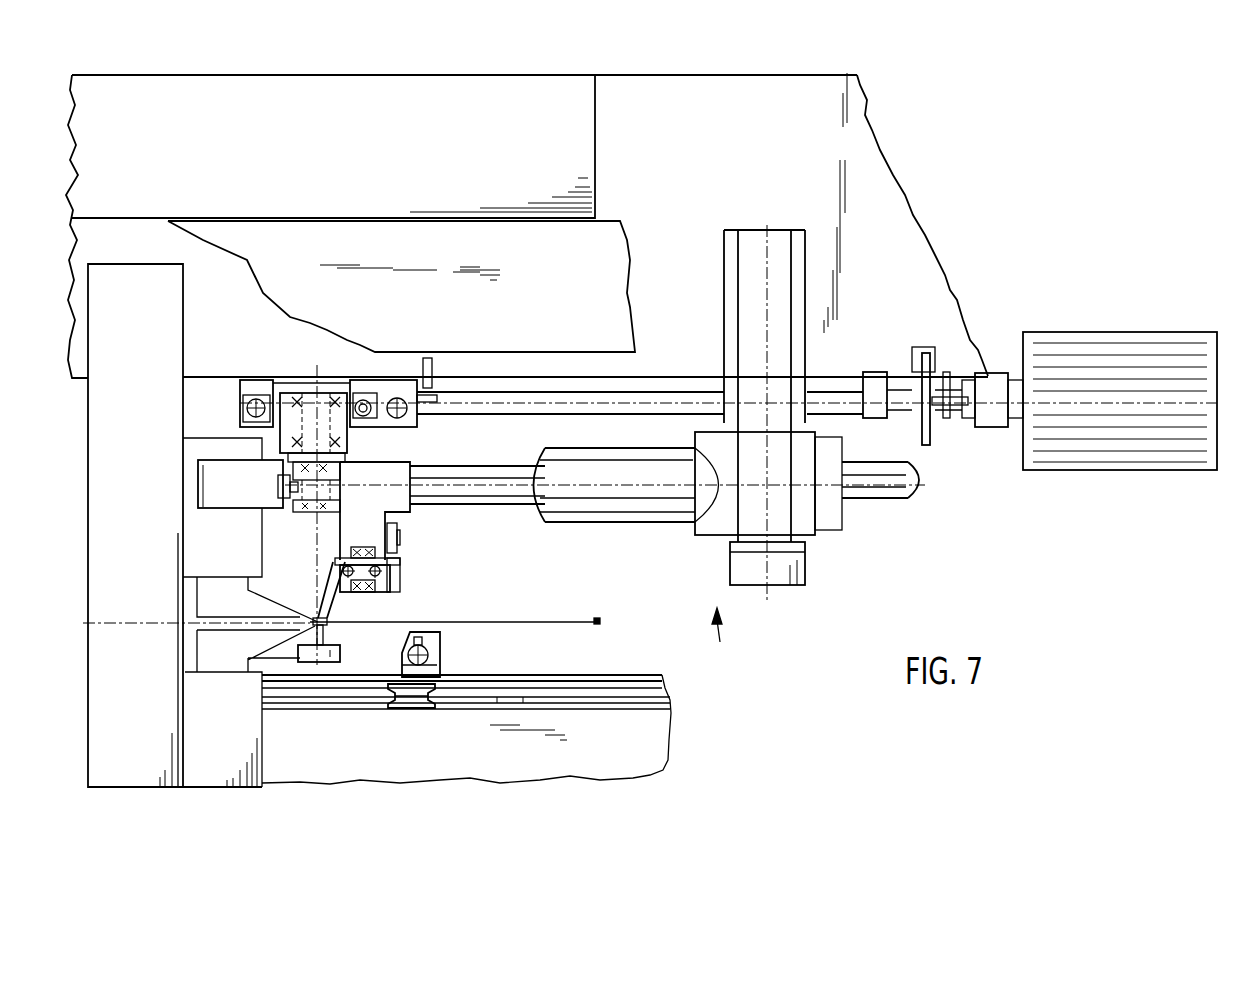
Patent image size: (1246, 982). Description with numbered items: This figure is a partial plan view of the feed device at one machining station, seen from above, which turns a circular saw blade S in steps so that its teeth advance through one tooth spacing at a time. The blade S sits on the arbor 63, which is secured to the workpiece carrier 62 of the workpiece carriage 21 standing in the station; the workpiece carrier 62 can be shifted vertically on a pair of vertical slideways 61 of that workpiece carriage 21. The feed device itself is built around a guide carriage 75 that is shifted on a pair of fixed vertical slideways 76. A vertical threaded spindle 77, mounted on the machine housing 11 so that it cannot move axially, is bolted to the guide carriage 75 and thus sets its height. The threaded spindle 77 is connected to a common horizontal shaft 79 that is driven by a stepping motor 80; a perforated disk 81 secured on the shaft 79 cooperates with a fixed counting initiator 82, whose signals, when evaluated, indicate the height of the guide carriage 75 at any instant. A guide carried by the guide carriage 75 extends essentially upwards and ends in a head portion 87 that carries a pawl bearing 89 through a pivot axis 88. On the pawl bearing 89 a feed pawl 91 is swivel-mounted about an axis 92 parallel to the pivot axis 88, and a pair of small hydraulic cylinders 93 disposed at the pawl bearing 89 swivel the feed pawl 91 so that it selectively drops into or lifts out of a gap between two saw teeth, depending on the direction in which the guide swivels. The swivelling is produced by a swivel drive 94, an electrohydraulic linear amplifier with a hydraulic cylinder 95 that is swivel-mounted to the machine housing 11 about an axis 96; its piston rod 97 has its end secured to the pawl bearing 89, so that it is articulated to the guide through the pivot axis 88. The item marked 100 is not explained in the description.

The machine housing 11 is at (850, 134).
The workpiece carriage 21 is at (440, 682).
The vertical slideways 61 is at (441, 656).
The workpiece carrier 62 is at (440, 634).
The arbor 63 is at (326, 622).
The guide carriage 75 is at (242, 420).
The fixed vertical slideways 76 is at (258, 394).
The vertical threaded spindle 77 is at (368, 419).
The common horizontal shaft 79 is at (540, 398).
The stepping motor 80 is at (1096, 454).
The perforated disk 81 is at (930, 441).
The counting initiator 82 is at (941, 407).
The head portion 87 is at (338, 478).
The pivot axis 88 is at (314, 531).
The pawl bearing 89 is at (373, 526).
The feed pawl 91 is at (328, 585).
The axis 92 is at (364, 594).
The small hydraulic cylinders 93 is at (332, 566).
The swivel drive 94 is at (722, 639).
The hydraulic cylinder 95 is at (653, 514).
The axis 96 is at (764, 572).
The piston rod 97 is at (473, 477).
The block 100 is at (276, 483).
The circular saw blade S is at (569, 621).